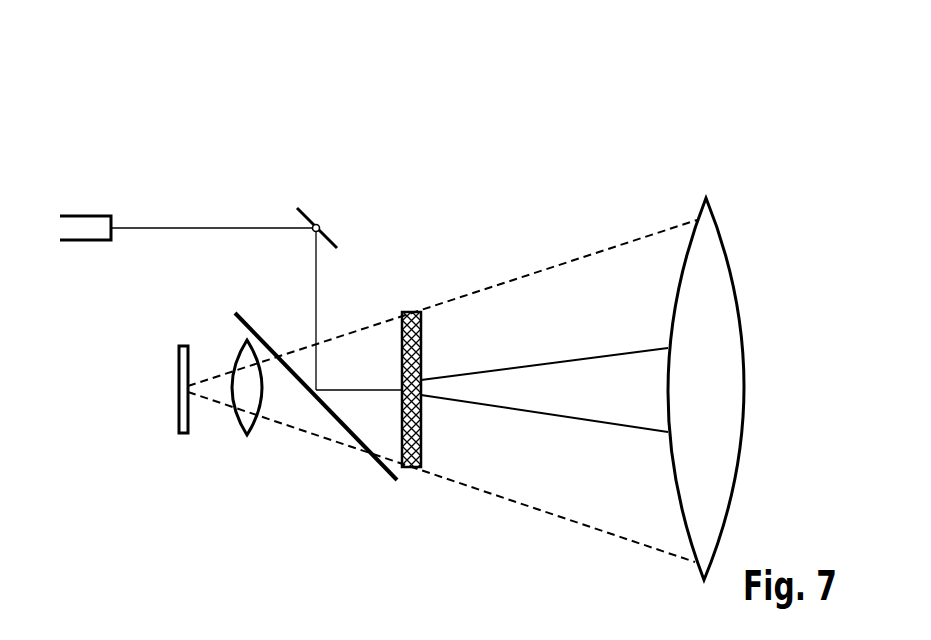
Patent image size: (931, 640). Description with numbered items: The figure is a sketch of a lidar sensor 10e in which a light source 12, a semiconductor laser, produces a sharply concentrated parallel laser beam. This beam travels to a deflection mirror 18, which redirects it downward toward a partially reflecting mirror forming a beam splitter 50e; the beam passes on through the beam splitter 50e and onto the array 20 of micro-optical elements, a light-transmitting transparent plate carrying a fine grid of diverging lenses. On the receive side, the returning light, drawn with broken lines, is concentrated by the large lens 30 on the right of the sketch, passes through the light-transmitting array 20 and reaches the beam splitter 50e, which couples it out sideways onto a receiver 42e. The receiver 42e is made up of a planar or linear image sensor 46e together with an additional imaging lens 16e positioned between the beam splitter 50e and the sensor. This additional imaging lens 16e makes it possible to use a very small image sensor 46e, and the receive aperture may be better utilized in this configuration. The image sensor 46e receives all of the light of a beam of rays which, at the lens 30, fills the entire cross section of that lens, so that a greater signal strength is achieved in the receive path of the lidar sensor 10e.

The lidar sensor 10e is at (414, 126).
The light source 12 is at (82, 216).
The deflection mirror 18 is at (307, 213).
The array of micro-optical elements 20 is at (416, 300).
The lens 30 is at (720, 230).
The beam splitter 50e is at (240, 315).
The image sensor 46e is at (179, 353).
The receiver 42e is at (135, 416).
The imaging lens 16e is at (247, 436).